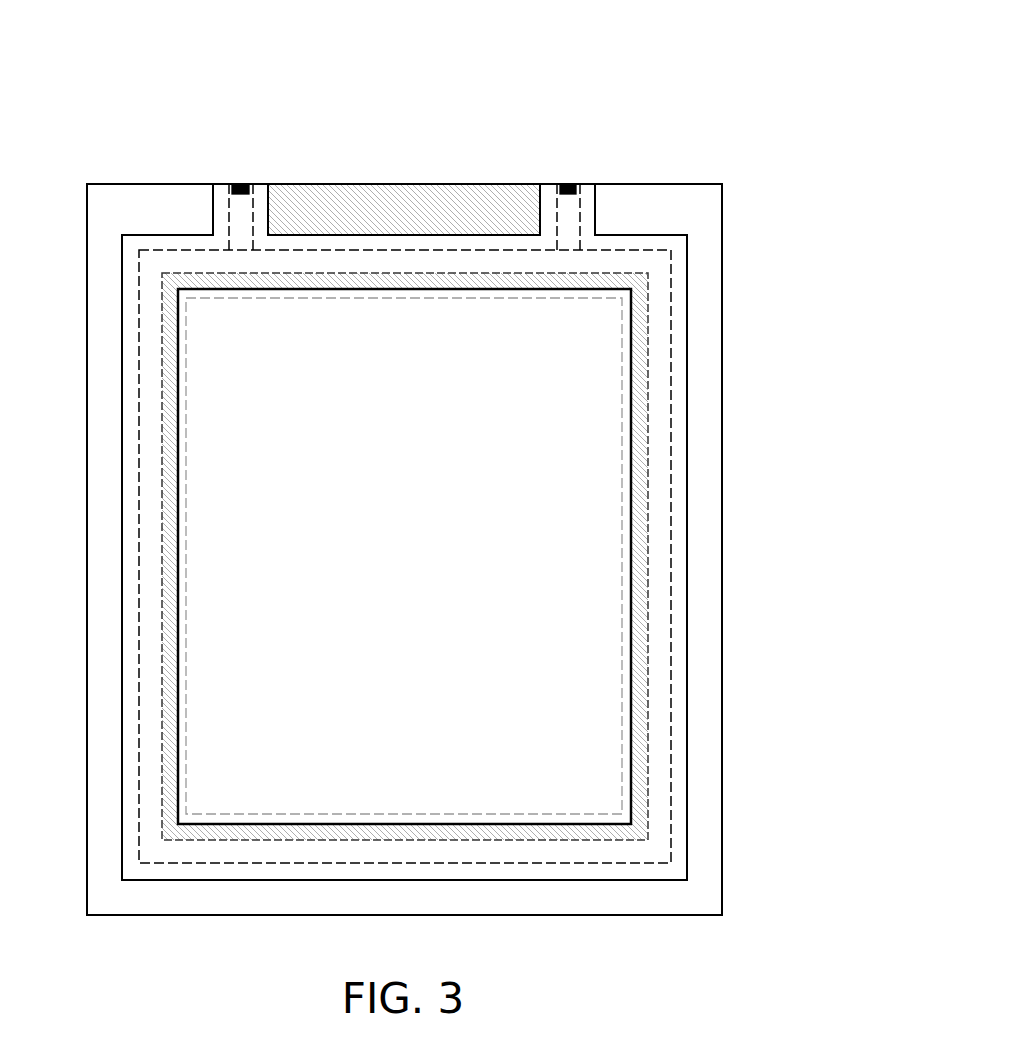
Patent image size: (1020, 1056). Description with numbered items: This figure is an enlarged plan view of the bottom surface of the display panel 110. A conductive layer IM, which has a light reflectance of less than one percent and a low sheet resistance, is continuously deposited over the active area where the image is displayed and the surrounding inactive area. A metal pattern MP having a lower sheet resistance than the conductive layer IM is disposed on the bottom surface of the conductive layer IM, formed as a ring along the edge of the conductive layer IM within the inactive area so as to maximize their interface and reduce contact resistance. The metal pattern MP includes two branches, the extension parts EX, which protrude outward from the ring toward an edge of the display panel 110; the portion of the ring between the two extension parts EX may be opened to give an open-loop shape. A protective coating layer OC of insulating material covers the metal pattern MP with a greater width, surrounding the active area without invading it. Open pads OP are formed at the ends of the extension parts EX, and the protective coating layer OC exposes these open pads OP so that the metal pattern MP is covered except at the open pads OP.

The display panel 110 is at (734, 79).
The open pad OP is at (563, 183).
The extension part EX is at (580, 208).
The protective coating layer OC is at (678, 292).
The metal pattern MP is at (657, 443).
The conductive layer IM is at (588, 730).